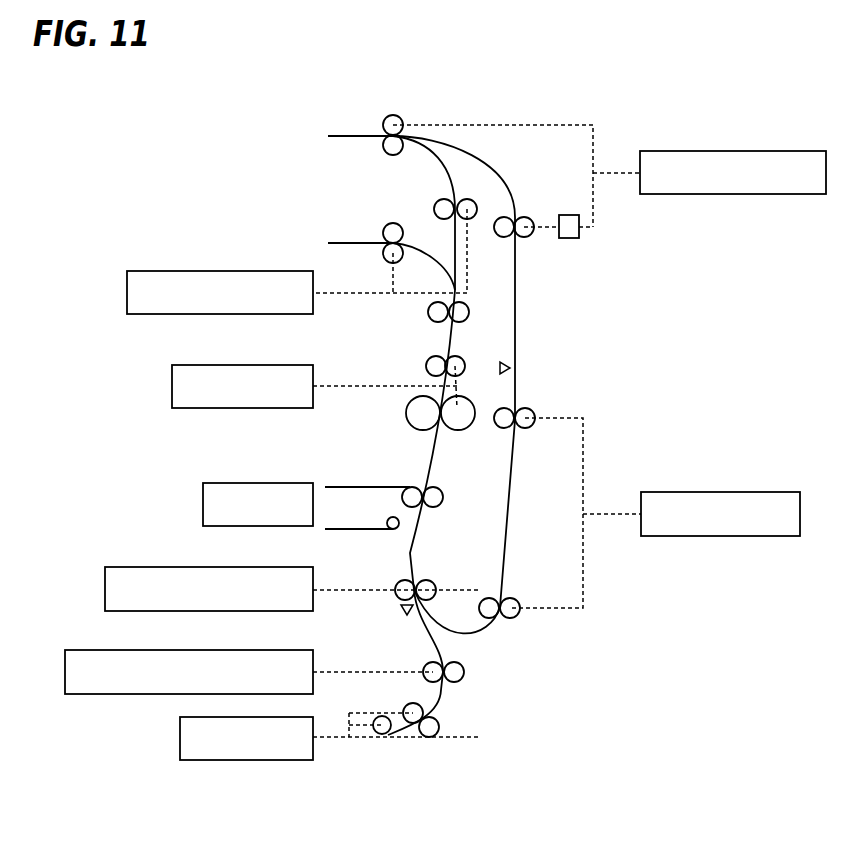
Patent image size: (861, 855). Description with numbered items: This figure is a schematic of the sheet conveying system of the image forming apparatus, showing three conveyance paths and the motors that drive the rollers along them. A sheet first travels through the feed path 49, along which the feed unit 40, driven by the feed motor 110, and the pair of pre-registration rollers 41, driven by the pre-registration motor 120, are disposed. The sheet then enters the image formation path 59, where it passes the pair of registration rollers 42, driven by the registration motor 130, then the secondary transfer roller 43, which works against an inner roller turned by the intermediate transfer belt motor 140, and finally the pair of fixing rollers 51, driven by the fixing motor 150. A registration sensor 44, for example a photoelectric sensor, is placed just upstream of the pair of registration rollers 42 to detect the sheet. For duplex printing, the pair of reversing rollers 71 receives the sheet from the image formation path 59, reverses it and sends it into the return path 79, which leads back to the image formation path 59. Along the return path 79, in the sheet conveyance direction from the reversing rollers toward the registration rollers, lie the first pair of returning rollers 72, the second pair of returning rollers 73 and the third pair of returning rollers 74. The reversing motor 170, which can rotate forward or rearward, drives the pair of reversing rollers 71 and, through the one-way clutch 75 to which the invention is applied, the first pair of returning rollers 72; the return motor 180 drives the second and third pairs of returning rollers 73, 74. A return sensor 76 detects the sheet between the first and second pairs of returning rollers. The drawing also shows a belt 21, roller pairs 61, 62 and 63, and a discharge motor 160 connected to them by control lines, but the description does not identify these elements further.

The intermediate transfer belt 21 is at (368, 486).
The feed unit 40 is at (401, 749).
The pair of pre-registration rollers 41 is at (464, 674).
The pair of registration rollers 42 is at (403, 580).
The secondary transfer roller 43 is at (433, 507).
The registration sensor 44 is at (401, 612).
The feed path 49 is at (443, 705).
The pair of fixing rollers 51 is at (406, 418).
The image formation path 59 is at (440, 363).
The discharge roller pair 61 is at (428, 318).
The discharge roller pair 62 is at (384, 228).
The discharge roller 63 is at (386, 156).
The pair of reversing rollers 71 is at (393, 115).
The first pair of returning rollers 72 is at (524, 217).
The second pair of returning rollers 73 is at (527, 408).
The third pair of returning rollers 74 is at (508, 620).
The one-way clutch 75 is at (570, 238).
The return sensor 76 is at (502, 364).
The return path 79 is at (515, 297).
The feed motor 110 is at (180, 732).
The pre-registration motor 120 is at (65, 672).
The registration motor 130 is at (105, 592).
The intermediate transfer belt (ITB) motor 140 is at (203, 508).
The fixing motor 150 is at (172, 390).
The discharge motor 160 is at (127, 300).
The reversing motor 170 is at (728, 151).
The return motor 180 is at (718, 492).